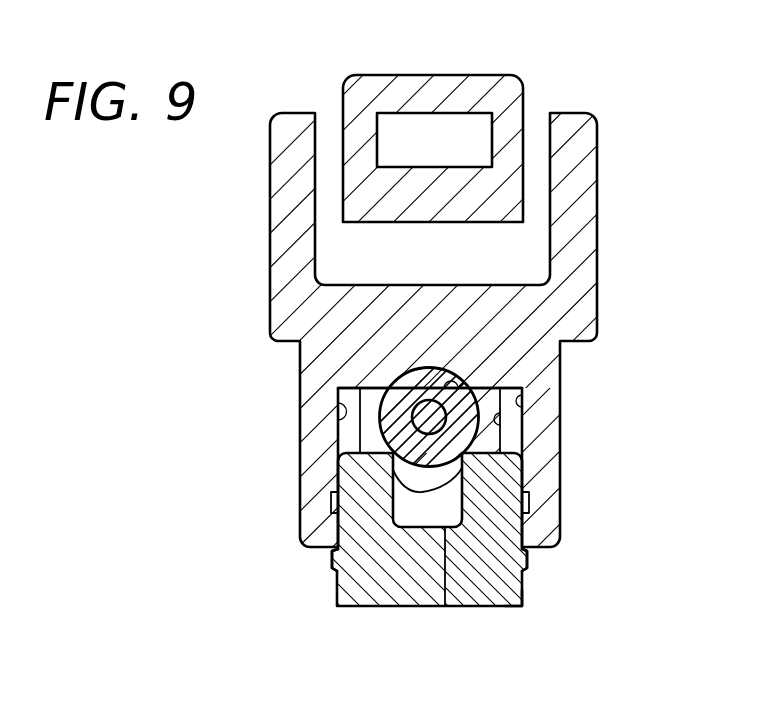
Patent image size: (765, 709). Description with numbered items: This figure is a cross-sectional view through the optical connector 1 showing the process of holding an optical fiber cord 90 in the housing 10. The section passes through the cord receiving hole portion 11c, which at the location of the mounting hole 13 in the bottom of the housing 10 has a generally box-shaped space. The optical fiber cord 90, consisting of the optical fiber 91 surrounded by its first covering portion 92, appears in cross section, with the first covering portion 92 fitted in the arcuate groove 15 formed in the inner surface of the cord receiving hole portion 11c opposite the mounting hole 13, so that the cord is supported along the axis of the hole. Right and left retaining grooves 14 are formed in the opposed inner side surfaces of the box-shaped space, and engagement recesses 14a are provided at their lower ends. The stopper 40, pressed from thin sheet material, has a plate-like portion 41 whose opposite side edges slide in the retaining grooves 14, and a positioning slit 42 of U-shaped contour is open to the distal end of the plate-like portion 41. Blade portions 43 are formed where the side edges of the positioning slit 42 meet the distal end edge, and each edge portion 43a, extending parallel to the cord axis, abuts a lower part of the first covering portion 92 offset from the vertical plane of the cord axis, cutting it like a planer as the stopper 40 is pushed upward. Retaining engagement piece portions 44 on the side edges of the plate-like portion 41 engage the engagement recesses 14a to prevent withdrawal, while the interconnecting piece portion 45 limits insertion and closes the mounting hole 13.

The optical connector 1 is at (540, 82).
The housing 10 is at (590, 203).
The cord receiving hole portion 11c is at (500, 421).
The mounting hole 13 is at (358, 540).
The retaining grooves 14 is at (340, 405).
The engagement recesses 14a is at (338, 492).
The groove 15 is at (474, 382).
The stopper 40 is at (417, 608).
The plate-like portions 41 is at (490, 596).
The positioning slit 42 is at (446, 585).
The blade portions 43 is at (427, 490).
The edge portion 43a is at (380, 440).
The retaining engagement piece portions 44 is at (332, 558).
The interconnecting piece portion 45 is at (517, 608).
The optical fiber cord 90 is at (467, 362).
The optical fiber 91 is at (420, 371).
The first covering portion 92 is at (434, 400).